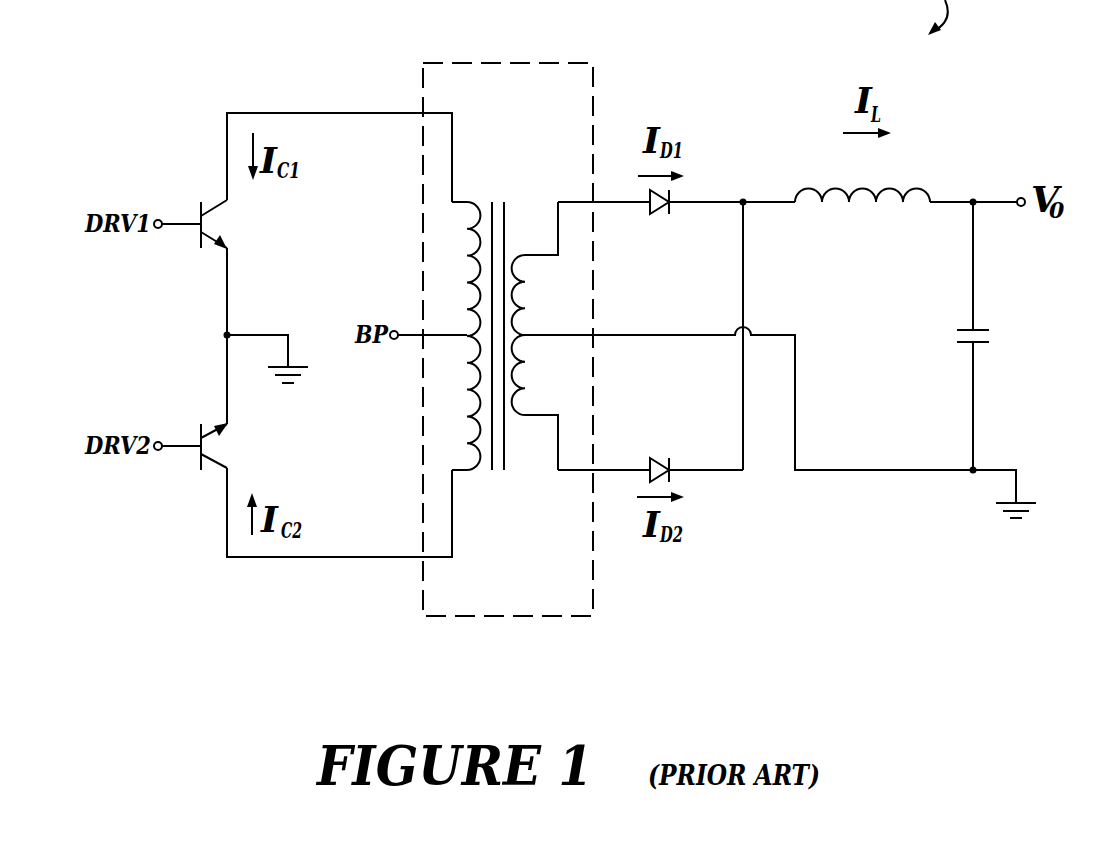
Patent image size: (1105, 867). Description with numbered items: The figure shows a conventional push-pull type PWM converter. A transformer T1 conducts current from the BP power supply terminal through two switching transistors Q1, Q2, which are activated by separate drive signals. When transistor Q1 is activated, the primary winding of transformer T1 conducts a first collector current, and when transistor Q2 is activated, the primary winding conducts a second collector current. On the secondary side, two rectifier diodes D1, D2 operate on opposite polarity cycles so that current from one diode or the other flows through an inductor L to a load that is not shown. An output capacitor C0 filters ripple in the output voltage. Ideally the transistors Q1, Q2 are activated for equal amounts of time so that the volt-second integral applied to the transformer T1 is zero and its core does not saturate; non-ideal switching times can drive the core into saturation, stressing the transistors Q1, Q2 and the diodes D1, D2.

The transistor Q1 is at (232, 224).
The transistor Q2 is at (232, 446).
The transformer T1 is at (508, 322).
The diode D1 is at (658, 216).
The diode D2 is at (658, 456).
The inductor L is at (862, 173).
The capacitor C0 is at (999, 339).